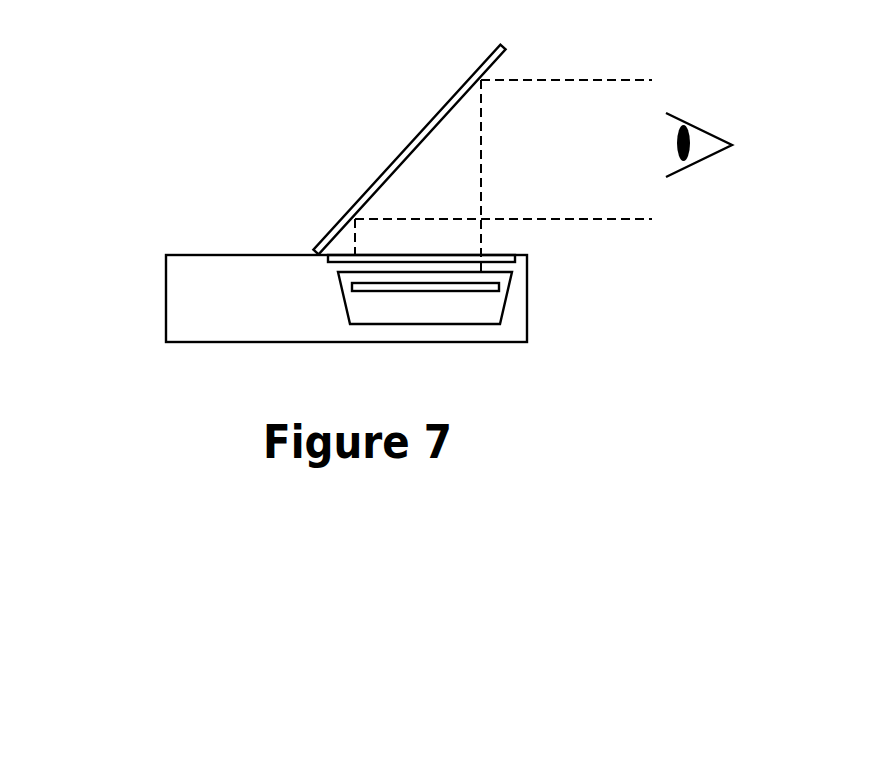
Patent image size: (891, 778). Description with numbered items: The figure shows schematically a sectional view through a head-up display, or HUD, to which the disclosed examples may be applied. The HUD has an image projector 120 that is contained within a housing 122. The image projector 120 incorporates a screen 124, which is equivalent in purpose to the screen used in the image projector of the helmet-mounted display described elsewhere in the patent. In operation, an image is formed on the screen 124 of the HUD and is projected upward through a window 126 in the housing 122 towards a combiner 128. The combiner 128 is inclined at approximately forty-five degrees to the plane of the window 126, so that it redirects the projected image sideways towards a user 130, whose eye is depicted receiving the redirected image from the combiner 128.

The image projector 120 is at (505, 311).
The housing 122 is at (205, 254).
The screen 124 is at (343, 290).
The window 126 is at (498, 253).
The combiner 128 is at (420, 130).
The user 130 is at (707, 128).